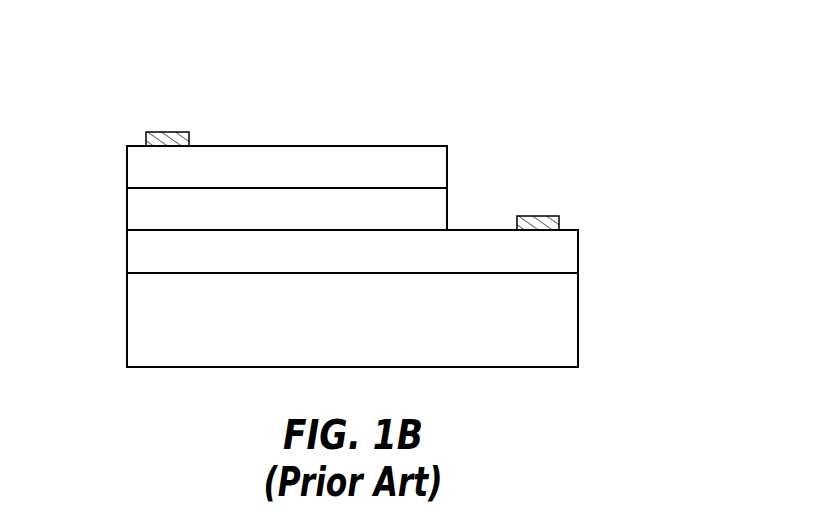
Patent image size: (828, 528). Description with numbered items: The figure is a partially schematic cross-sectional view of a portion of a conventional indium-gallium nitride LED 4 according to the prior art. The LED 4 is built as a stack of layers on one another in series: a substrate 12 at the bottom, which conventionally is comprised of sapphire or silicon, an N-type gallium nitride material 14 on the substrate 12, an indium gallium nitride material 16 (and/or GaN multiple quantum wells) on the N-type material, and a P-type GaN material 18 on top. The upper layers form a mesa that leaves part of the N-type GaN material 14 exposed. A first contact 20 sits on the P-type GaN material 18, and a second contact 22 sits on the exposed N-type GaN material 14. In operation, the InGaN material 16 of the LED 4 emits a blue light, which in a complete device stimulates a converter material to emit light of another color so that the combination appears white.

The LED 4 is at (586, 118).
The substrate 12 is at (578, 317).
The N-type gallium nitride (GaN) material 14 is at (578, 253).
The indium gallium nitride (InGaN) material 16 is at (127, 215).
The P-type GaN material 18 is at (127, 176).
The first contact 20 is at (167, 132).
The second contact 22 is at (538, 216).